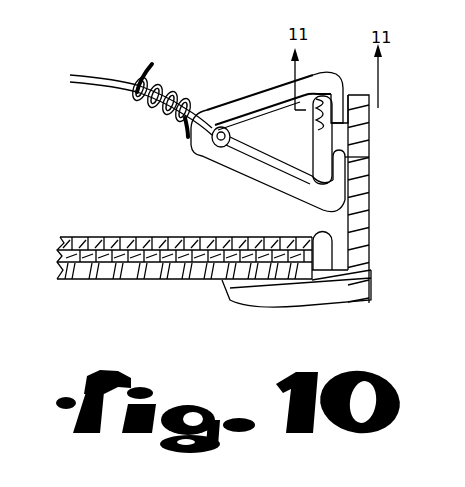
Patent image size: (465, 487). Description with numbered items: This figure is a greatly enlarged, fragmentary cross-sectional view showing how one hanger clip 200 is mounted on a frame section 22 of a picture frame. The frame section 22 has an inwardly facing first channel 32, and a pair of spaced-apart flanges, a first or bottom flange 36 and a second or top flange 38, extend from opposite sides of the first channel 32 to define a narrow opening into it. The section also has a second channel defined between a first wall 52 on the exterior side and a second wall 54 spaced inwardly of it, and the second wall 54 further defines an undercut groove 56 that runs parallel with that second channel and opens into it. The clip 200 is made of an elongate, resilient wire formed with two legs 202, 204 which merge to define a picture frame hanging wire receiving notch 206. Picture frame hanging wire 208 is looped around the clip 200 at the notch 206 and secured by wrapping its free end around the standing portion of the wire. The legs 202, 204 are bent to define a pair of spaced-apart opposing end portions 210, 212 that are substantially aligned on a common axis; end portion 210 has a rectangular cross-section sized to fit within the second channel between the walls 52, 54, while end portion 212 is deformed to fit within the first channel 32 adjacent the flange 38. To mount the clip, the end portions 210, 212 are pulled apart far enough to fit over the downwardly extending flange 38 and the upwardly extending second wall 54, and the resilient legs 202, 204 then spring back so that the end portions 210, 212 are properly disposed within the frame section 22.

The frame section 22 is at (376, 173).
The first channel 32 is at (345, 250).
The first or bottom flange 36 is at (322, 242).
The second or top flange 38 is at (314, 171).
The first wall 52 is at (355, 107).
The second wall 54 is at (330, 105).
The undercut groove 56 is at (369, 140).
The hanger clip 200 is at (315, 107).
The leg 202 is at (248, 103).
The leg 204 is at (238, 172).
The picture frame hanging wire receiving notch 206 is at (231, 137).
The picture frame hanging wire 208 is at (88, 75).
The end portion 210 is at (338, 76).
The end portion 212 is at (347, 200).